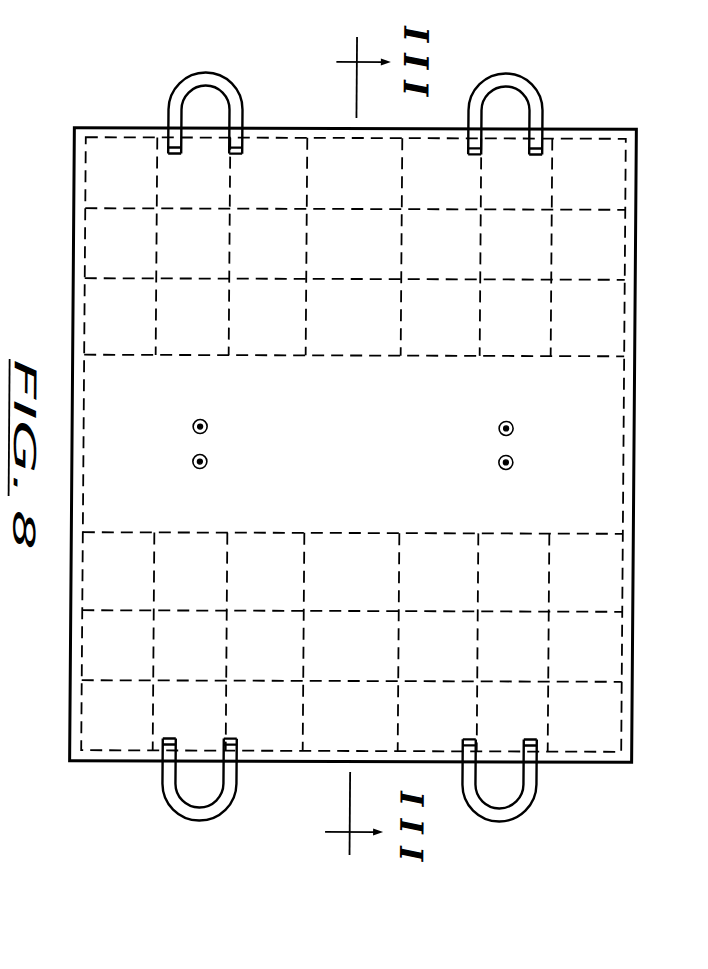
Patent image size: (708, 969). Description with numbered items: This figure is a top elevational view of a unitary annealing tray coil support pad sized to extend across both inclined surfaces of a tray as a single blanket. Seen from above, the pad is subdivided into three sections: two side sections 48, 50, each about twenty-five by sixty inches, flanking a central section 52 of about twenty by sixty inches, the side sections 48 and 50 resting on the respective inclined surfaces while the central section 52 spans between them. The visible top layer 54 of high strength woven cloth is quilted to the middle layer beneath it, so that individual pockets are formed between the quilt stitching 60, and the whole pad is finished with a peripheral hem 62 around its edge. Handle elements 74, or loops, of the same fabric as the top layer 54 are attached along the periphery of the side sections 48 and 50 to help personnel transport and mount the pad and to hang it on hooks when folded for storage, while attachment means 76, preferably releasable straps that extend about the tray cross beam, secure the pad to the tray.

The side section 48 is at (605, 241).
The side section 50 is at (601, 567).
The central section 52 is at (605, 434).
The top layer 54 is at (340, 322).
The quilt stitching 60 is at (320, 207).
The peripheral hem 62 is at (597, 137).
The handle elements 74 is at (184, 79).
The attachment means 76 is at (528, 464).